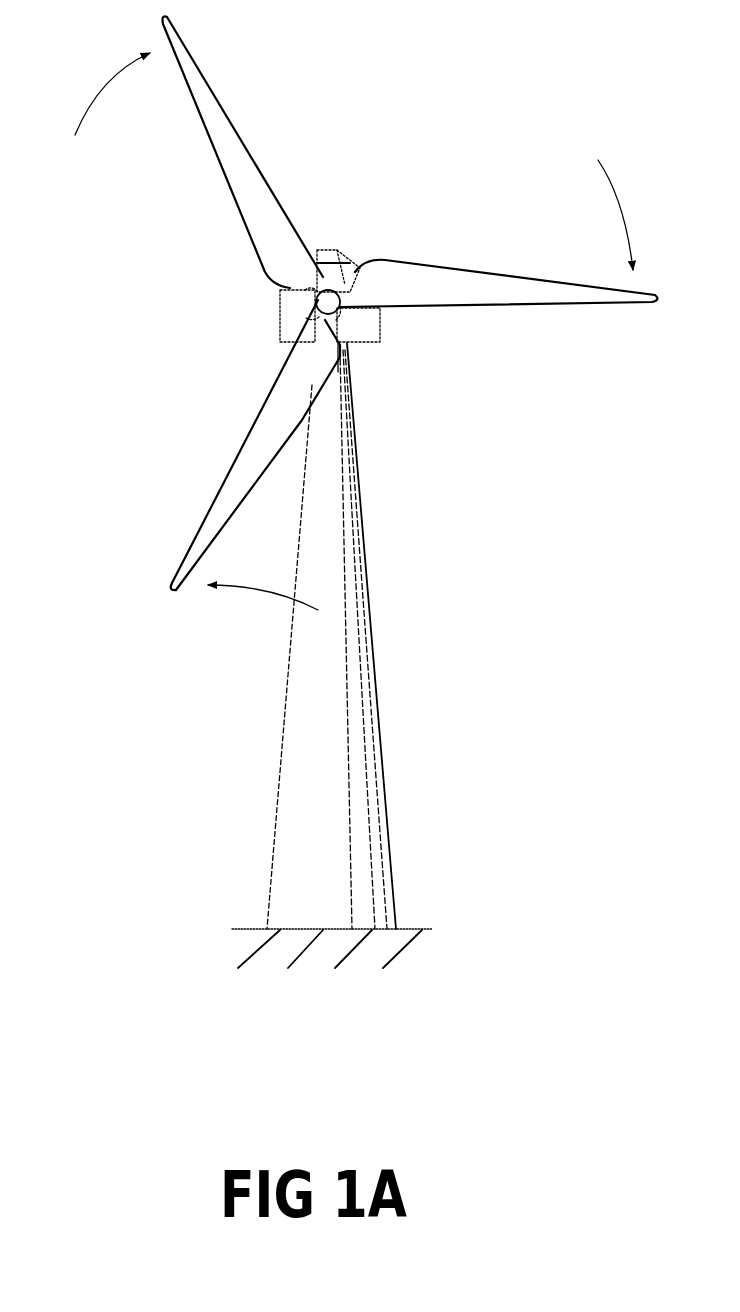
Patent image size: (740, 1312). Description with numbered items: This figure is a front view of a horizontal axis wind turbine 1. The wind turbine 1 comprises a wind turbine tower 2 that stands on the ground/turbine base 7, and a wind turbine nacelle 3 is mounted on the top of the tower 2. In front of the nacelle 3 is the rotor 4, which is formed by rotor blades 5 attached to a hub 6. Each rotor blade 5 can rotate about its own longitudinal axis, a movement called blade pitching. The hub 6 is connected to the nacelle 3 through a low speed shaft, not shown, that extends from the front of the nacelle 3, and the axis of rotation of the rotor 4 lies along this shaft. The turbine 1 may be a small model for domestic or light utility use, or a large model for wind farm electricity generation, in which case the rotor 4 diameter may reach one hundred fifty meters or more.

The wind turbine 1 is at (366, 492).
The wind turbine tower 2 is at (377, 675).
The wind turbine nacelle 3 is at (380, 327).
The rotor 4 is at (366, 313).
The rotor blade 5 is at (490, 275).
The hub 6 is at (338, 283).
The ground/turbine base 7 is at (238, 927).